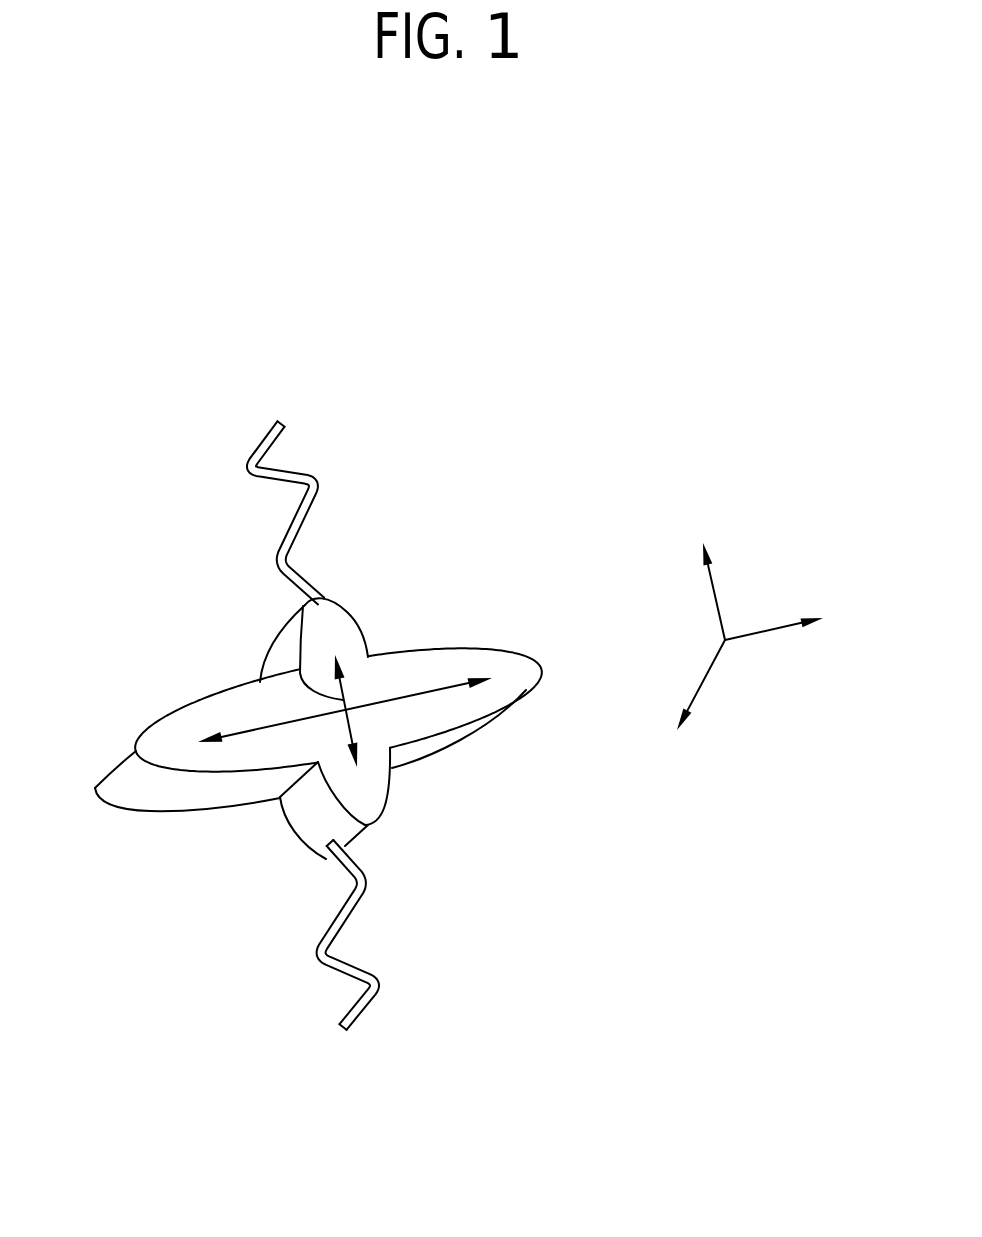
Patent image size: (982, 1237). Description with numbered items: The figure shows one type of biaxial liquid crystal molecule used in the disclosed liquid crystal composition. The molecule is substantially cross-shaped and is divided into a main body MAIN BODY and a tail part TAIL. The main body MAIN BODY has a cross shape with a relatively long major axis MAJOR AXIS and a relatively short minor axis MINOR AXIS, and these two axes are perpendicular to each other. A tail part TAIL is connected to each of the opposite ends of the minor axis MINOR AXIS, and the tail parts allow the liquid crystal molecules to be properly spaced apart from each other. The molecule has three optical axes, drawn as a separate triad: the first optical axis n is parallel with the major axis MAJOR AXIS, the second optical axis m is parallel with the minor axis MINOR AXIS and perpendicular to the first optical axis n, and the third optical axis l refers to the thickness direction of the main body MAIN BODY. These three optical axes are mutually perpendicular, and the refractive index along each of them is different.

The tail part TAIL is at (272, 421).
The main body MAIN BODY is at (123, 805).
The major axis MAJOR AXIS is at (433, 687).
The minor axis MINOR AXIS is at (298, 674).
The second optical axis m is at (709, 572).
The first optical axis n is at (785, 616).
The third optical axis l is at (693, 699).